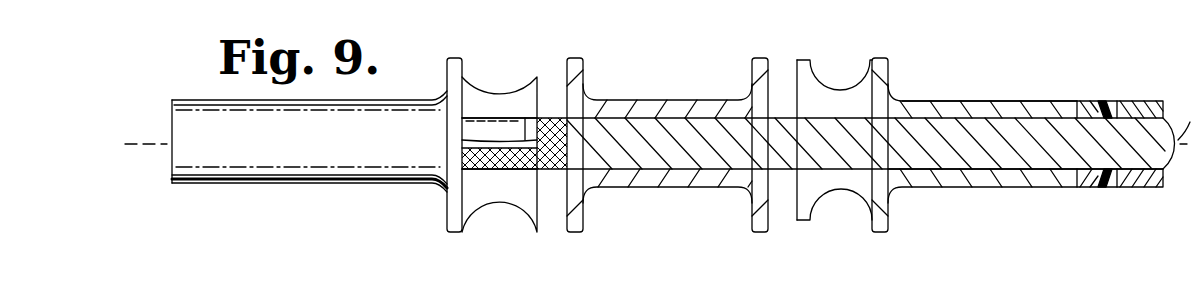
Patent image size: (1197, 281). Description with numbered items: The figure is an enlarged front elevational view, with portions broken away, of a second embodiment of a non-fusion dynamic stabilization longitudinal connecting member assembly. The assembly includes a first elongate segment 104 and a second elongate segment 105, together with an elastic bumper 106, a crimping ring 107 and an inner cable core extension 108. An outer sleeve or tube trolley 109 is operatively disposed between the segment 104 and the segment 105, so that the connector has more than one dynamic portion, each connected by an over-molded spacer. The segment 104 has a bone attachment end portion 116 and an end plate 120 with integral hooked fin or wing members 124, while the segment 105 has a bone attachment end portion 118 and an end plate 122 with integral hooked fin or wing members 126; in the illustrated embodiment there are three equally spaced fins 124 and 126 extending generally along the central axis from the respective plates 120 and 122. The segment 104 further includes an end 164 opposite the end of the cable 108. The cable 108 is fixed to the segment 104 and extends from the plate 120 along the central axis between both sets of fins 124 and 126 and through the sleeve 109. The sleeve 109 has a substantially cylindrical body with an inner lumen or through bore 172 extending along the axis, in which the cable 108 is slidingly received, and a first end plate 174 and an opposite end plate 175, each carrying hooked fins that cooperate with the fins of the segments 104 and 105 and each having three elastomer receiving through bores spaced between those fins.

The first elongate segment 104 is at (291, 186).
The end 164 is at (172, 183).
The bone attachment end portion 116 is at (220, 187).
The end plate 120 is at (452, 57).
The hooked fin or wing member 124 is at (528, 74).
The first end plate 174 is at (573, 58).
The inner lumen or through bore 172 is at (668, 119).
The opposite end plate 175 is at (758, 57).
The outer sleeve or tube trolley 109 is at (673, 187).
The hooked fin or wing member 126 is at (798, 60).
The end plate 122 is at (875, 58).
The second elongate segment 105 is at (923, 196).
The bone attachment end portion 118 is at (967, 101).
The inner cable core extension 108 is at (980, 165).
The elastic bumper 106 is at (1115, 178).
The crimping ring 107 is at (1147, 188).